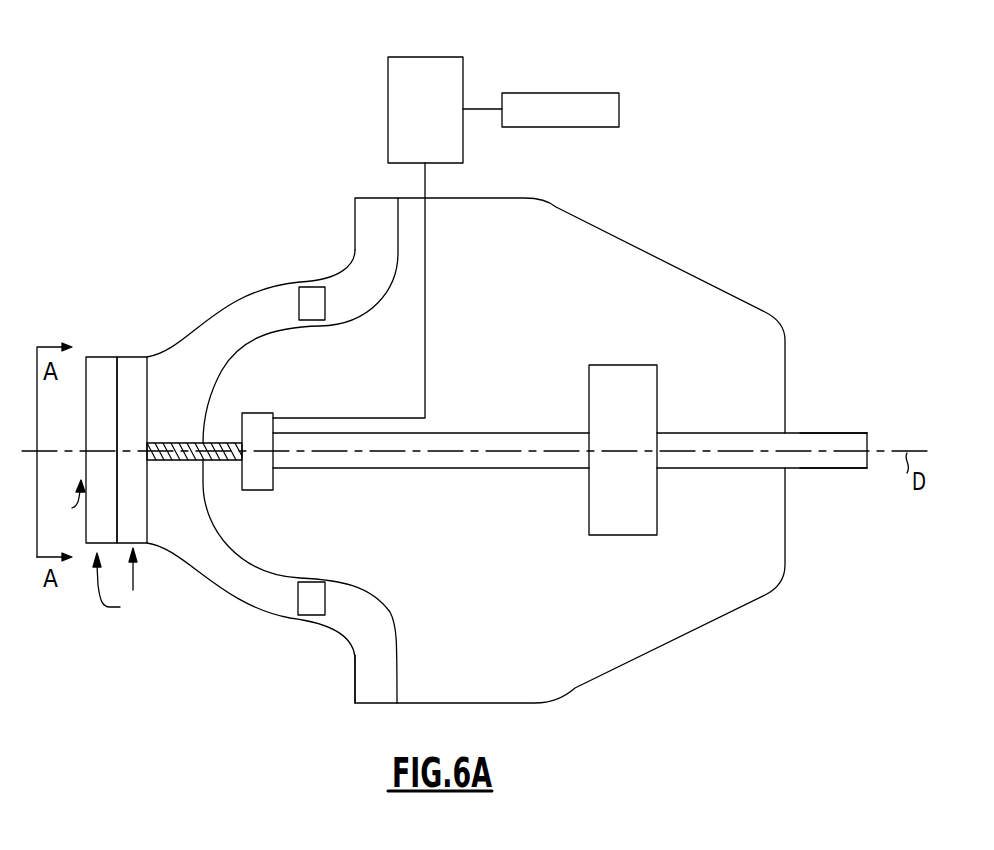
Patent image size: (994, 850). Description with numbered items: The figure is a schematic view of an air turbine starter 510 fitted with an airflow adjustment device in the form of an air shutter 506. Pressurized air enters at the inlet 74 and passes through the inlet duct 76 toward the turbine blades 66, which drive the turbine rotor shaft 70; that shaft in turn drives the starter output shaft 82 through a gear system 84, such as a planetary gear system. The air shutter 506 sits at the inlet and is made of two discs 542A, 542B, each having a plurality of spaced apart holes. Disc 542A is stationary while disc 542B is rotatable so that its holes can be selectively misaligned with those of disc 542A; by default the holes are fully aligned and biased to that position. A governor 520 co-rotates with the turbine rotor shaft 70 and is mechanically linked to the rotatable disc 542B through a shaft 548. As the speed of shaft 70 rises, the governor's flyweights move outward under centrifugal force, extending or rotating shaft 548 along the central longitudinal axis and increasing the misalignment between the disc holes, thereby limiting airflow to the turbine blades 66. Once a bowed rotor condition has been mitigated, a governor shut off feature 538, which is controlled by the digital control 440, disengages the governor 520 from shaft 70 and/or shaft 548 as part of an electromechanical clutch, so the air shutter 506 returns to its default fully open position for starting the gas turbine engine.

The governor shut off feature 538 is at (418, 57).
The digital control 440 is at (577, 93).
The air turbine starter 510 is at (692, 236).
The stationary disc 542A is at (102, 370).
The rotatable disc 542B is at (130, 370).
The shaft 548 is at (197, 410).
The governor 520 is at (257, 420).
The turbine rotor shaft 70 is at (532, 443).
The starter output shaft 82 is at (852, 437).
The gear system 84 is at (627, 377).
The turbine blades 66 is at (312, 295).
The inlet 74 is at (63, 503).
The air shutter 506 is at (128, 586).
The inlet duct 76 is at (187, 538).